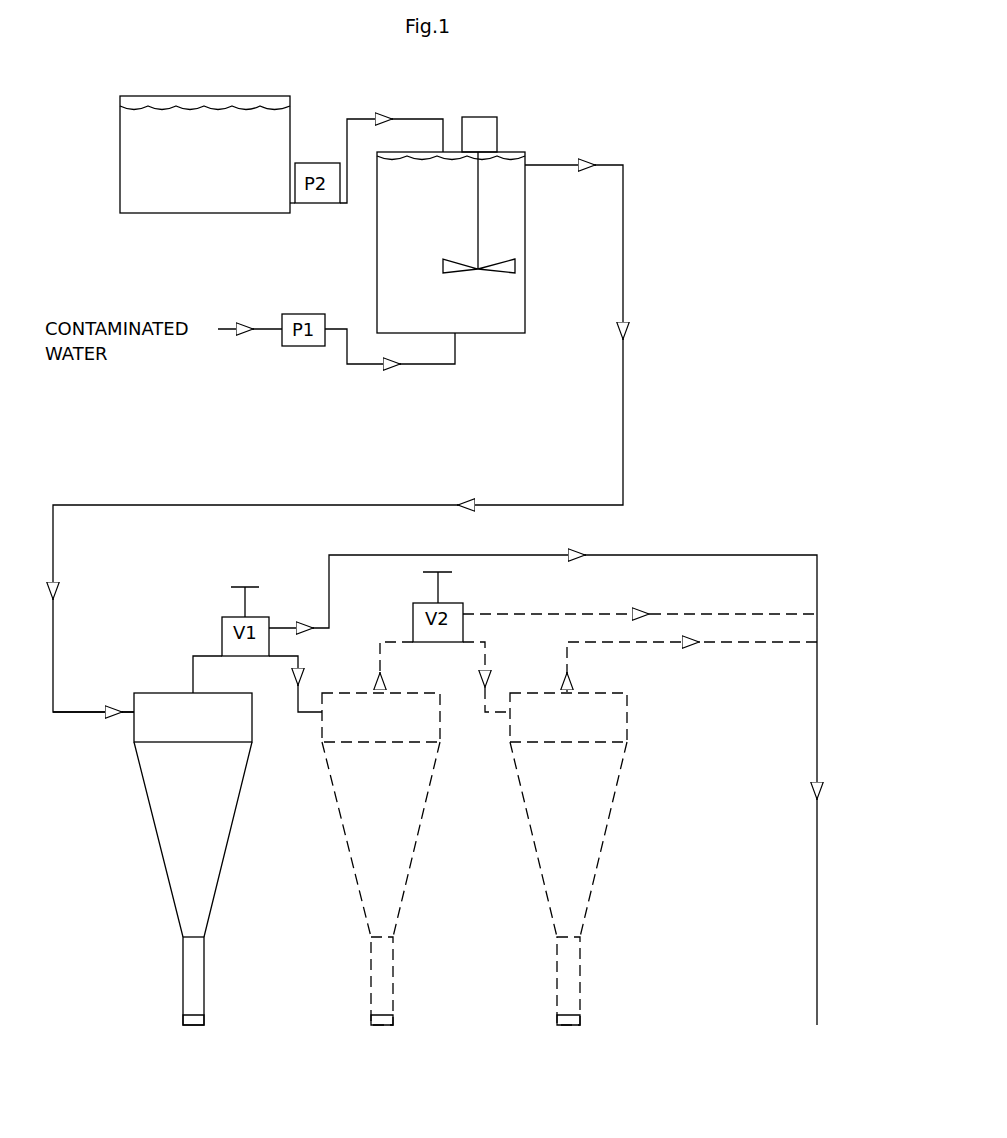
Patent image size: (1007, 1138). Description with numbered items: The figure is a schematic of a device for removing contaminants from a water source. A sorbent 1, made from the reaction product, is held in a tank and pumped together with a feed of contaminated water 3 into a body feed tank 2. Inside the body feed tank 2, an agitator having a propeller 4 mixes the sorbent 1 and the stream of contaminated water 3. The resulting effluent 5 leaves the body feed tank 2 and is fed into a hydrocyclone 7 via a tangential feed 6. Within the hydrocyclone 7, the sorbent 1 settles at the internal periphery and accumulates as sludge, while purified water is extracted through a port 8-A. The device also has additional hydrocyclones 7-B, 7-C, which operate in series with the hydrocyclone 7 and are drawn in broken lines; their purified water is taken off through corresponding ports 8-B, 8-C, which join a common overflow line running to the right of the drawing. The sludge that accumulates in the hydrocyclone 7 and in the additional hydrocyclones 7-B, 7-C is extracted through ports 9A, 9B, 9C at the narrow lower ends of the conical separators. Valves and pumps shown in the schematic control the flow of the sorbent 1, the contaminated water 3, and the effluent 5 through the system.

The sorbent 1 is at (278, 128).
The body feed tank 2 is at (526, 250).
The feed of contaminated water 3 is at (367, 366).
The propeller 4 is at (479, 239).
The effluent 5 is at (623, 306).
The tangential feed 6 is at (85, 712).
The hydrocyclone 7 is at (155, 808).
The additional hydrocyclone 7-B is at (340, 812).
The additional hydrocyclone 7-C is at (530, 812).
The port 8-A is at (193, 670).
The port 8-B is at (380, 648).
The port 8-C is at (567, 648).
The sludge extraction port 9A is at (194, 1025).
The sludge extraction port 9B is at (382, 1025).
The sludge extraction port 9C is at (569, 1025).